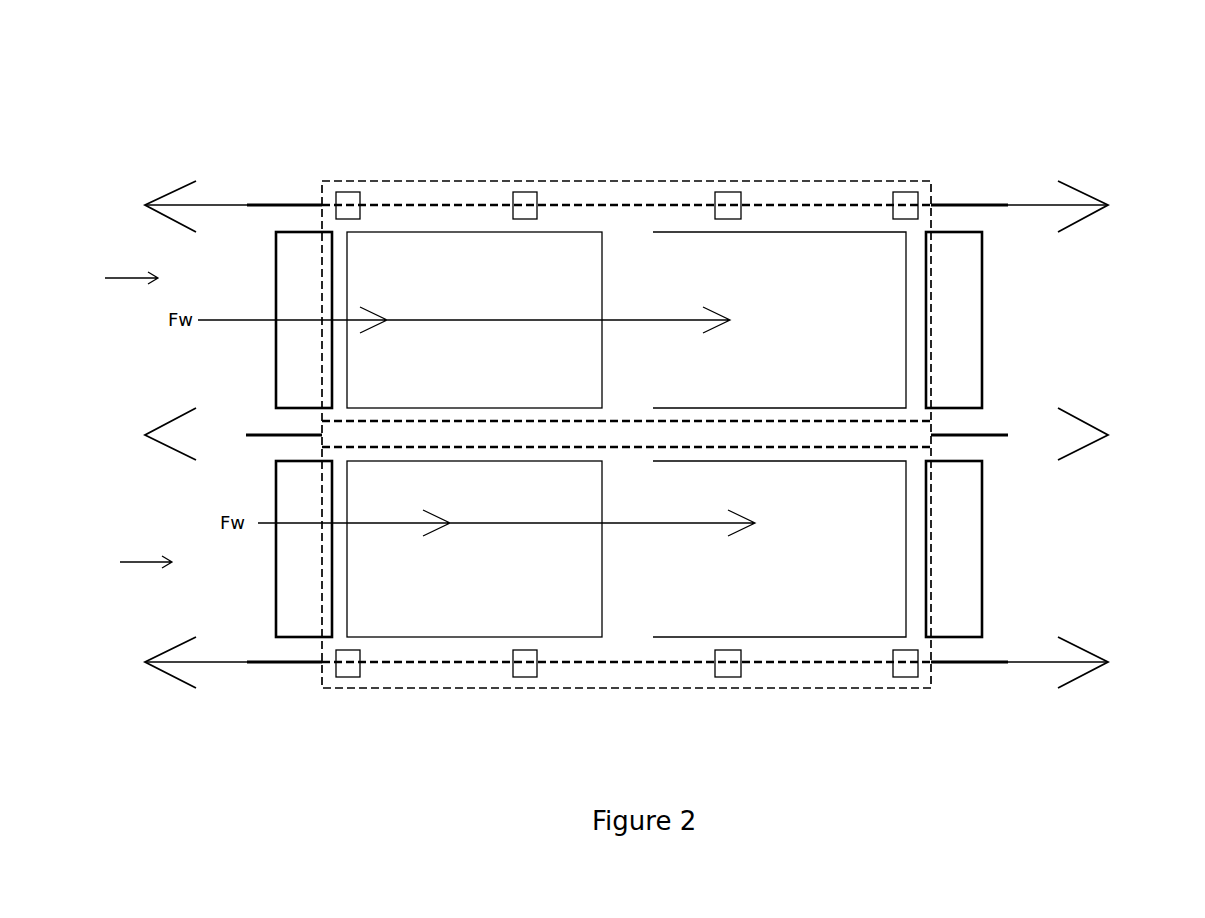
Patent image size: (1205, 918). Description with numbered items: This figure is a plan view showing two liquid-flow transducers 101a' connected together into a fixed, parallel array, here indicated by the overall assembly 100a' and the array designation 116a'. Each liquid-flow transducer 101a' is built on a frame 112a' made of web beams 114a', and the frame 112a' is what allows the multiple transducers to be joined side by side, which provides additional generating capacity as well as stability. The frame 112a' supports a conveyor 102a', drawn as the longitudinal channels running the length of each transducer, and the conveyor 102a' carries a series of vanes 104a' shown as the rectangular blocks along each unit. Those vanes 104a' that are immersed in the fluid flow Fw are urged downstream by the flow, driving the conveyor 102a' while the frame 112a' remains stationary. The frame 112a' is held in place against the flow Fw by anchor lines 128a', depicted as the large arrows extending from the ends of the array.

The flow battery / electrochemical system 100a' is at (1101, 86).
The liquid-flow transducer 101a' is at (111, 419).
The conveyor 102a' is at (626, 430).
The vane 104a' is at (631, 434).
The frame 112a' is at (626, 406).
The web beams 114a' is at (627, 464).
The manifold assembly 116a' is at (243, 90).
The anchor lines 128a' is at (630, 435).